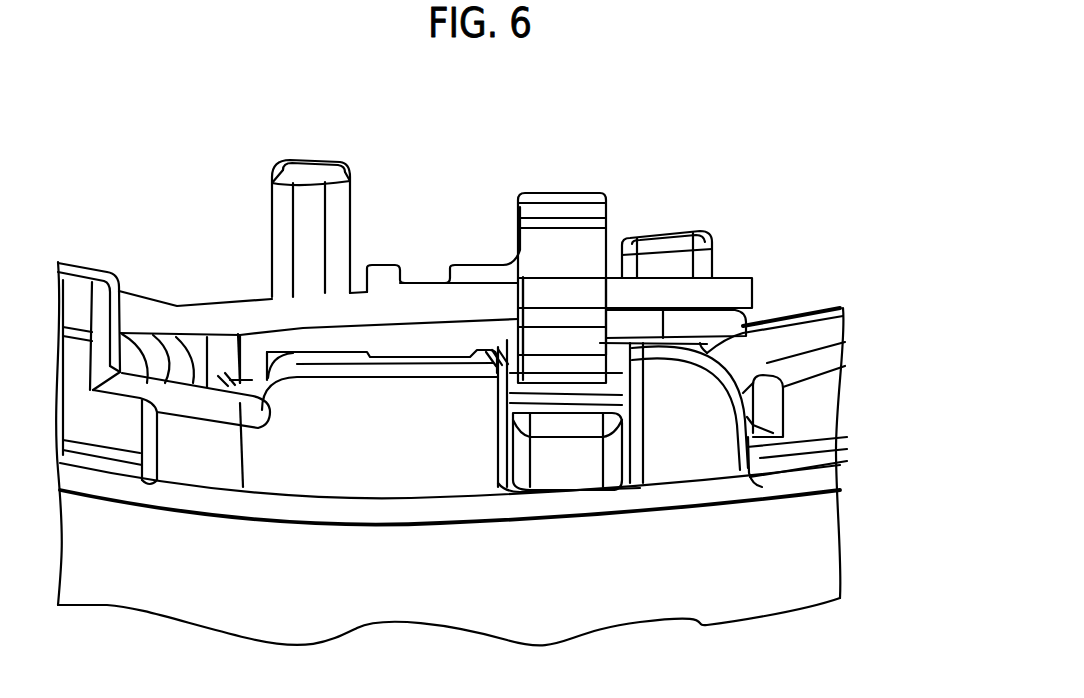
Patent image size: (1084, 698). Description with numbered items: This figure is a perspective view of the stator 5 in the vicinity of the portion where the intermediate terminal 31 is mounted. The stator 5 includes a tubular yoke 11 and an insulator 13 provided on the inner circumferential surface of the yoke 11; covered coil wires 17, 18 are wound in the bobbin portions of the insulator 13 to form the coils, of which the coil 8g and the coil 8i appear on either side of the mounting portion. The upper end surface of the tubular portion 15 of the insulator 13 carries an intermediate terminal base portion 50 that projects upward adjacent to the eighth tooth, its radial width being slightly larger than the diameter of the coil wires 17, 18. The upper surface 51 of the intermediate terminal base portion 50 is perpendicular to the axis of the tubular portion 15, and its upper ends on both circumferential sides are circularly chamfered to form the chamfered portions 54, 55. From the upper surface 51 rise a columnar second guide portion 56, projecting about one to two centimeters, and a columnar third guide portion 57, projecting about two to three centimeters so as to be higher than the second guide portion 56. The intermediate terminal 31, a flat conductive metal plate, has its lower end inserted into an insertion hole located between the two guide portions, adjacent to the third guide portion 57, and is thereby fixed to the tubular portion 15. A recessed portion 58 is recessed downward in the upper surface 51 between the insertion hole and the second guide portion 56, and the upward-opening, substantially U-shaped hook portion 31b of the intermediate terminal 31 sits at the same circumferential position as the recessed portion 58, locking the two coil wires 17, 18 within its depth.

The stator 5 is at (813, 120).
The coil 8g is at (795, 325).
The coil 8i is at (141, 342).
The yoke 11 is at (634, 598).
The insulator 13 is at (840, 443).
The tubular portion 15 is at (830, 380).
The coil wire 17 is at (727, 320).
The coil wire 18 is at (240, 340).
The intermediate terminal 31 is at (552, 188).
The hook portion 31b is at (583, 290).
The intermediate terminal base portion 50 is at (385, 435).
The upper surface 51 is at (487, 364).
The chamfered portion 54 is at (735, 398).
The chamfered portion 55 is at (262, 385).
The second guide portion 56 is at (683, 230).
The third guide portion 57 is at (310, 157).
The recessed portion 58 is at (517, 360).